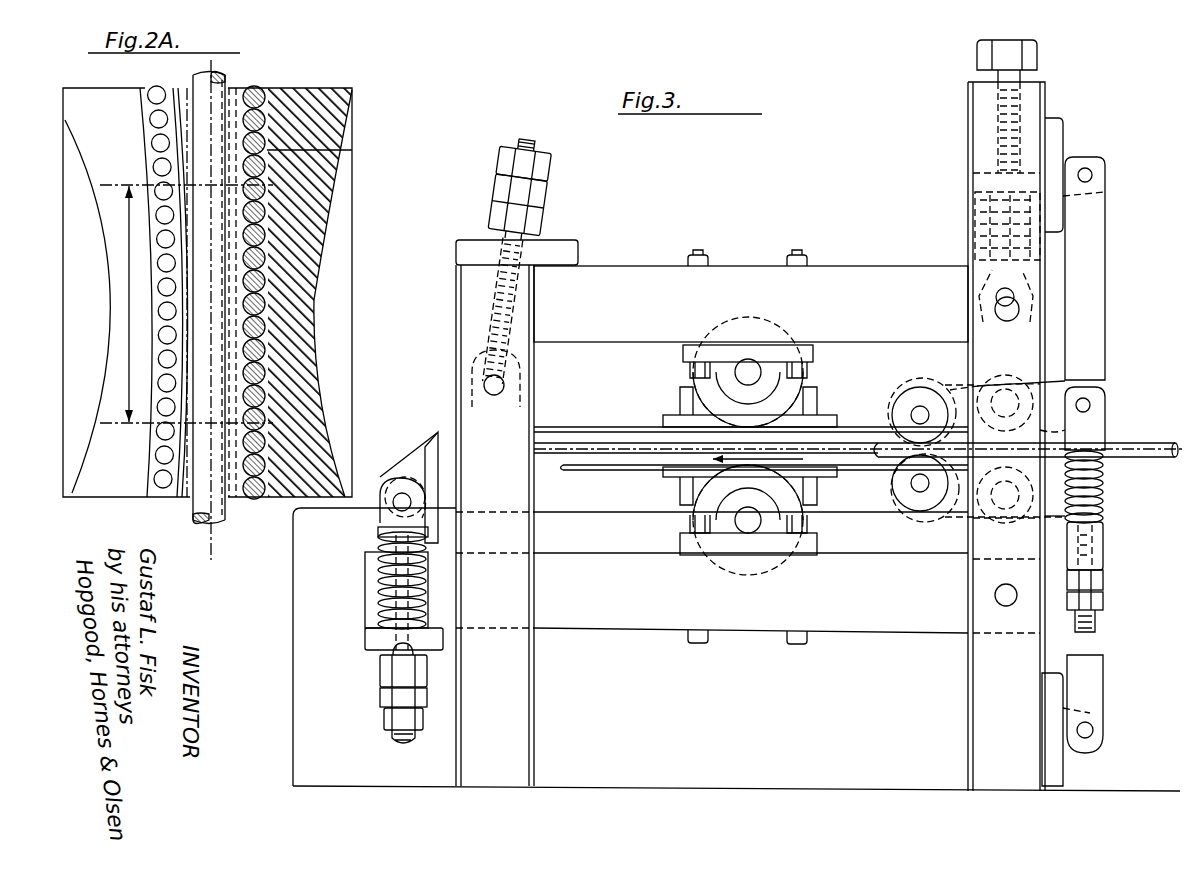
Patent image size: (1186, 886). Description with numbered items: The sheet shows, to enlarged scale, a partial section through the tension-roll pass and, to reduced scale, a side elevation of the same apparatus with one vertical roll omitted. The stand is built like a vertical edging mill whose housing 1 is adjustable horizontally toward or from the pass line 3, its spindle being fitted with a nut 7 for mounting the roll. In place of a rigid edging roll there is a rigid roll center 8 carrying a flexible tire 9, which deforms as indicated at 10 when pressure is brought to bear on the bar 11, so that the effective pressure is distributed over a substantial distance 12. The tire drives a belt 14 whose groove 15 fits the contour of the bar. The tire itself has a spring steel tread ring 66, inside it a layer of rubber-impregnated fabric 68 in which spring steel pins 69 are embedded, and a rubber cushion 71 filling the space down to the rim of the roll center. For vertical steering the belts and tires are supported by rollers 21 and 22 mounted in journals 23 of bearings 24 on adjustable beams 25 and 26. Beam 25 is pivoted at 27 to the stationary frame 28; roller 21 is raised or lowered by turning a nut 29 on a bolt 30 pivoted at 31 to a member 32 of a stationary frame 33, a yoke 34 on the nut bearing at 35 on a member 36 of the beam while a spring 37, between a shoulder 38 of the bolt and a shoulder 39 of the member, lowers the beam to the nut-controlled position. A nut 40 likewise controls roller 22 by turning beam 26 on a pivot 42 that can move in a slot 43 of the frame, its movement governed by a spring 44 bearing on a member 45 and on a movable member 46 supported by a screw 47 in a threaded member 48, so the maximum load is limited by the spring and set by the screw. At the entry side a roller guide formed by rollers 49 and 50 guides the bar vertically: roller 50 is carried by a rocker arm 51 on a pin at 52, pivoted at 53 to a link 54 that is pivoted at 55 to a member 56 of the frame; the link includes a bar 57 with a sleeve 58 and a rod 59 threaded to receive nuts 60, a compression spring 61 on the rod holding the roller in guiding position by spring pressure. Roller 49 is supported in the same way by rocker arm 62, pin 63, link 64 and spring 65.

In FIG. 3, the housing 1 is at (555, 527).
In FIG. 2A, the pass line 3 is at (212, 550).
In FIG. 3, the pass line 3 is at (659, 448).
In FIG. 3, the nut 7 is at (687, 397).
In FIG. 2A, the roll center 8 is at (70, 448).
In FIG. 3, the roll center 8 is at (600, 425).
In FIG. 2A, the flexible tire 9 is at (88, 98).
In FIG. 2A, the deformation of tire 10 is at (312, 325).
In FIG. 2A, the bar 11 is at (190, 510).
In FIG. 3, the bar 11 is at (1172, 444).
In FIG. 2A, the distance 12 is at (186, 304).
In FIG. 2A, the belt 14 is at (187, 155).
In FIG. 3, the belt 14 is at (545, 426).
In FIG. 2A, the groove 15 is at (183, 127).
In FIG. 3, the groove 15 is at (562, 447).
In FIG. 3, the roller 21 is at (787, 500).
In FIG. 3, the roller 22 is at (787, 391).
In FIG. 3, the journal 23 is at (747, 534).
In FIG. 3, the bearing 24 is at (708, 538).
In FIG. 3, the beam 25 is at (614, 615).
In FIG. 3, the beam 26 is at (622, 271).
In FIG. 3, the pivot 27 is at (1006, 606).
In FIG. 3, the stationary frame 28 is at (970, 304).
In FIG. 3, the nut 29 is at (384, 697).
In FIG. 3, the bolt 30 is at (395, 738).
In FIG. 3, the pivot 31 is at (394, 494).
In FIG. 3, the member 32 is at (420, 462).
In FIG. 3, the stationary frame 33 is at (457, 416).
In FIG. 3, the yoke 34 is at (386, 672).
In FIG. 3, the bearing point 35 is at (375, 641).
In FIG. 3, the member 36 is at (372, 650).
In FIG. 3, the spring 37 is at (378, 576).
In FIG. 3, the shoulder 38 is at (378, 527).
In FIG. 3, the shoulder 39 is at (376, 620).
In FIG. 3, the nut 40 is at (545, 193).
In FIG. 3, the pivot 42 is at (997, 312).
In FIG. 3, the slot 43 is at (997, 292).
In FIG. 3, the spring 44 is at (976, 208).
In FIG. 3, the member 45 is at (1023, 344).
In FIG. 3, the movable member 46 is at (987, 172).
In FIG. 3, the screw 47 is at (992, 130).
In FIG. 3, the threaded member 48 is at (978, 93).
In FIG. 3, the roller 49 is at (916, 508).
In FIG. 3, the roller 50 is at (907, 398).
In FIG. 3, the rocker arm 51 is at (951, 398).
In FIG. 3, the pin 52 is at (1005, 390).
In FIG. 3, the pivot 53 is at (1098, 396).
In FIG. 3, the link 54 is at (1093, 427).
In FIG. 3, the pivot 55 is at (1093, 730).
In FIG. 3, the member 56 is at (1071, 750).
In FIG. 3, the bar 57 is at (1098, 627).
In FIG. 3, the sleeve 58 is at (1103, 556).
In FIG. 3, the rod 59 is at (1106, 538).
In FIG. 3, the nuts 60 is at (1103, 582).
In FIG. 3, the compression spring 61 is at (1105, 488).
In FIG. 3, the rocker arm 62 is at (962, 507).
In FIG. 3, the pin 63 is at (1010, 515).
In FIG. 3, the link 64 is at (1105, 319).
In FIG. 3, the spring 65 is at (1089, 398).
In FIG. 2A, the tread ring 66 is at (352, 150).
In FIG. 2A, the fabric layer 68 is at (268, 284).
In FIG. 2A, the pins 69 is at (313, 352).
In FIG. 2A, the rubber cushion 71 is at (352, 126).